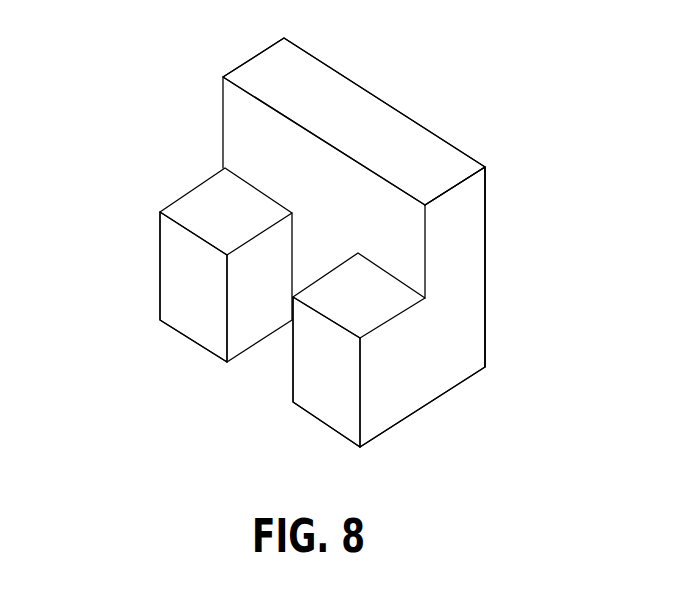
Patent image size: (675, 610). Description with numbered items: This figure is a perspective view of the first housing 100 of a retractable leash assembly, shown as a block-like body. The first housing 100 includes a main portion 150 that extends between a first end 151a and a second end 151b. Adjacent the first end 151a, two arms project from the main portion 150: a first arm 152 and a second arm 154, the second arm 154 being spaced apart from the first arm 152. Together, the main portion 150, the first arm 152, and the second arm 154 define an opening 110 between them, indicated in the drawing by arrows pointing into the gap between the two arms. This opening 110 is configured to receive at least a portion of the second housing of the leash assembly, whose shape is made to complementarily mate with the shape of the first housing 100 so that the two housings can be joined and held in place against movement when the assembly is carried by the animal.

The first housing 100 is at (487, 243).
The opening 110 is at (190, 167).
The main portion 150 is at (370, 120).
The first end 151a is at (470, 380).
The second end 151b is at (465, 178).
The first arm 152 is at (180, 313).
The second arm 154 is at (338, 412).